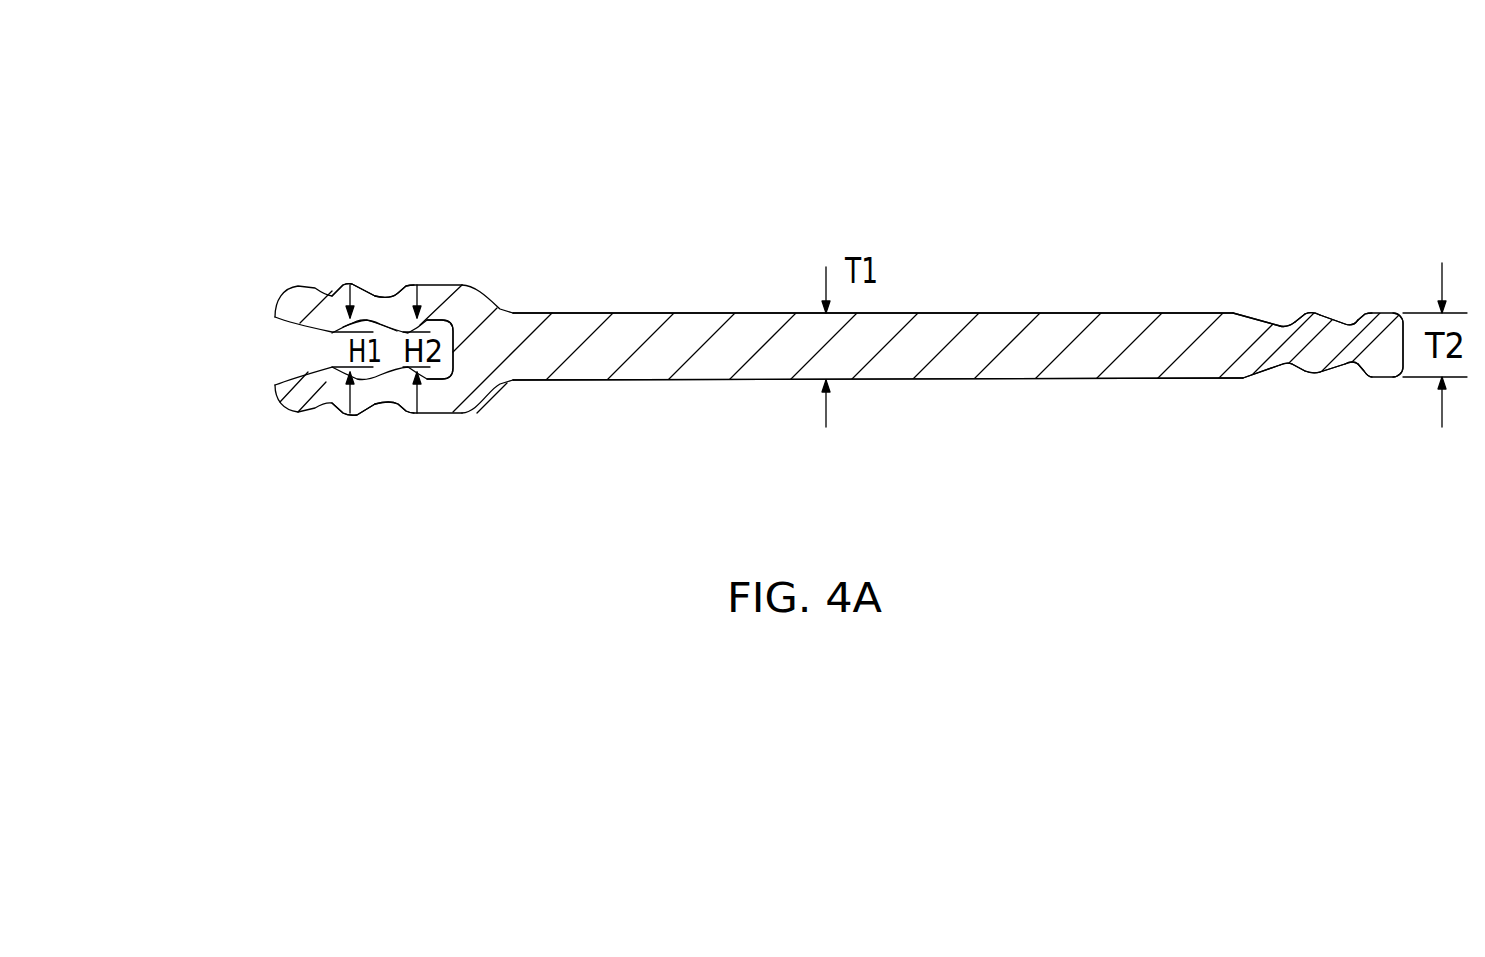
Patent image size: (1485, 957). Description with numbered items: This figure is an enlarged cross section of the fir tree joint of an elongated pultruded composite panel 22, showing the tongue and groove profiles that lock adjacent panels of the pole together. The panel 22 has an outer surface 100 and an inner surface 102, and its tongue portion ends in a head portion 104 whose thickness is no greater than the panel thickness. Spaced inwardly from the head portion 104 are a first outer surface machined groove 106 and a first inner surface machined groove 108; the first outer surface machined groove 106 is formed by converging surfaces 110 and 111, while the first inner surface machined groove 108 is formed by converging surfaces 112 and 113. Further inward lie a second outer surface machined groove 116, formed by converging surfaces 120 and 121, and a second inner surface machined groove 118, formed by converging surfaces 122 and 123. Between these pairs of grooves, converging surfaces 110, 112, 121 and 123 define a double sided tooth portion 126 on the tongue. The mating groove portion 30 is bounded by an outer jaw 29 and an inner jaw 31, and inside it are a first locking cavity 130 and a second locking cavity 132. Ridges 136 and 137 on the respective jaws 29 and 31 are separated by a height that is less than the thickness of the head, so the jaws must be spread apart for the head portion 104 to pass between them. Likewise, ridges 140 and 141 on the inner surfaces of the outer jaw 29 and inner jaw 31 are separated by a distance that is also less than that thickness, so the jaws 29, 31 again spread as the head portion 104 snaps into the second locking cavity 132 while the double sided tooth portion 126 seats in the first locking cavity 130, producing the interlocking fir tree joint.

The elongated panel 22 is at (862, 195).
The outer jaw 29 is at (297, 302).
The groove 30 is at (290, 352).
The inner jaw 31 is at (310, 403).
The outer surface 100 is at (900, 313).
The inner surface 102 is at (902, 382).
The head portion 104 is at (1405, 327).
The first outer surface machined groove 106 is at (1345, 317).
The first inner surface machined groove 108 is at (1352, 372).
The converging surface 110 is at (1327, 317).
The converging surface 111 is at (1370, 313).
The converging surface 112 is at (1330, 368).
The converging surface 113 is at (1367, 372).
The second outer surface machined groove 116 is at (1277, 318).
The second inner surface machined groove 118 is at (1282, 372).
The converging surface 120 is at (1248, 317).
The converging surface 121 is at (1300, 318).
The converging surface 122 is at (1253, 372).
The converging surface 123 is at (1292, 365).
The double sided tooth portion 126 is at (1313, 368).
The first locking cavity 130 is at (376, 330).
The second locking cavity 132 is at (449, 318).
The ridge 136 is at (337, 332).
The ridge 137 is at (330, 404).
The ridge 140 is at (406, 320).
The ridge 141 is at (403, 405).